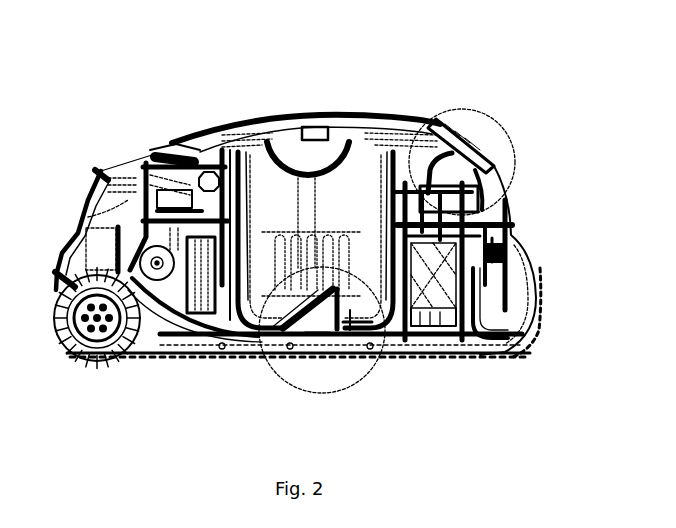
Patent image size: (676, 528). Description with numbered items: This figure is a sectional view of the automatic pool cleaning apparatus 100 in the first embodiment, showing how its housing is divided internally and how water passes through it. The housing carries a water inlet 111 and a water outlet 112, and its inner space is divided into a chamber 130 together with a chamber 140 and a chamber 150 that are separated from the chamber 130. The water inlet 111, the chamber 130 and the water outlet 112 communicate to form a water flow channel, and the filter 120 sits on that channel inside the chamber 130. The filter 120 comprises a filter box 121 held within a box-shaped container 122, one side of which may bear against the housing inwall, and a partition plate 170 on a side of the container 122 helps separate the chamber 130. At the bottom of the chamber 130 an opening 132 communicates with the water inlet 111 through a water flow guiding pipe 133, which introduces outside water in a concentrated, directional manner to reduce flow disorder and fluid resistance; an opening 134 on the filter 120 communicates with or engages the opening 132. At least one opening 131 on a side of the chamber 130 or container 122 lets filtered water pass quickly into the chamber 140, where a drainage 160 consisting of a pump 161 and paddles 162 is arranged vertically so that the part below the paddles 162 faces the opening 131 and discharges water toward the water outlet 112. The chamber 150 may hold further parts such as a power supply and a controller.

The apparatus 100 is at (157, 62).
The water inlet 111 is at (287, 340).
The water outlet 112 is at (466, 134).
The filter 120 is at (328, 195).
The filter box 121 is at (253, 142).
The container 122 is at (178, 160).
The chamber 130 is at (283, 186).
The opening 131 is at (343, 345).
The opening 132 is at (313, 345).
The water flow guiding pipe 133 is at (288, 346).
The opening 134 is at (303, 258).
The chamber 140 is at (393, 340).
The chamber 150 is at (213, 340).
The drainage 160 is at (455, 338).
The pump 161 is at (507, 337).
The paddles 162 is at (454, 189).
The partition plate 170 is at (140, 172).